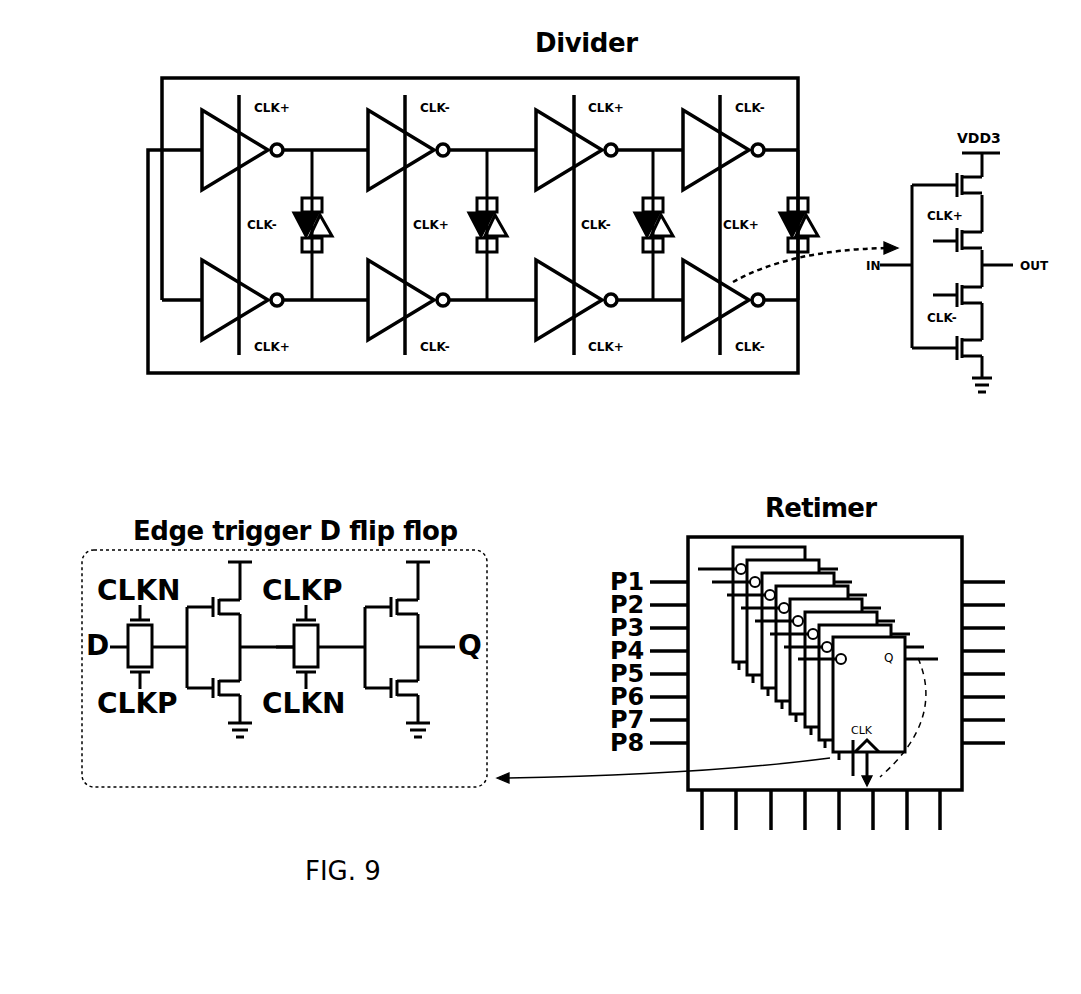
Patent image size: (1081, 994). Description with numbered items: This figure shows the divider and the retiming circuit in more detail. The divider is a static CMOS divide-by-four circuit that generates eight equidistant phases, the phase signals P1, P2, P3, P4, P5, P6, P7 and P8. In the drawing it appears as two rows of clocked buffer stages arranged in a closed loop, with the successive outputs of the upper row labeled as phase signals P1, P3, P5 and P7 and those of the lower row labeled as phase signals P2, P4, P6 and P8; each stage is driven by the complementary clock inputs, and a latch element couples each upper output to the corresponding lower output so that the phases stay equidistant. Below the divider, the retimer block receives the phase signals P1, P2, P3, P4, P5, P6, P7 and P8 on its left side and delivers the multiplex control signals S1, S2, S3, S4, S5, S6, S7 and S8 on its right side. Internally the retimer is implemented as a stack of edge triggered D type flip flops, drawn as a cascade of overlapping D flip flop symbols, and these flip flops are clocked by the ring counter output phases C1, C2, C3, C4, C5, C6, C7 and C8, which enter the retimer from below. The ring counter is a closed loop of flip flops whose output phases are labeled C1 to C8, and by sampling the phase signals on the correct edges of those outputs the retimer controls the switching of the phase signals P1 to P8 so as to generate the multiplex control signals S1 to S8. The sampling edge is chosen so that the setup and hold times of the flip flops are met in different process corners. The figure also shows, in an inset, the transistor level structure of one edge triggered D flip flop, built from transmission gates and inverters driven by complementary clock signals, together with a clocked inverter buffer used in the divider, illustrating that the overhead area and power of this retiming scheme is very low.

The phase signal P1 is at (325, 132).
The phase signal P2 is at (325, 322).
The phase signal P3 is at (492, 132).
The phase signal P4 is at (492, 322).
The phase signal P5 is at (650, 132).
The phase signal P6 is at (650, 320).
The phase signal P7 is at (808, 146).
The phase signal P8 is at (808, 300).
The multiplex control signal S1 is at (1003, 582).
The multiplex control signal S2 is at (1003, 605).
The multiplex control signal S3 is at (1003, 628).
The multiplex control signal S4 is at (1003, 651).
The multiplex control signal S5 is at (1003, 674).
The multiplex control signal S6 is at (1003, 697).
The multiplex control signal S7 is at (1003, 720).
The multiplex control signal S8 is at (1003, 743).
The ring counter output phase C1 is at (702, 830).
The ring counter output phase C2 is at (736, 830).
The ring counter output phase C3 is at (771, 830).
The ring counter output phase C4 is at (805, 830).
The ring counter output phase C5 is at (839, 830).
The ring counter output phase C6 is at (873, 830).
The ring counter output phase C7 is at (907, 830).
The ring counter output phase C8 is at (940, 830).